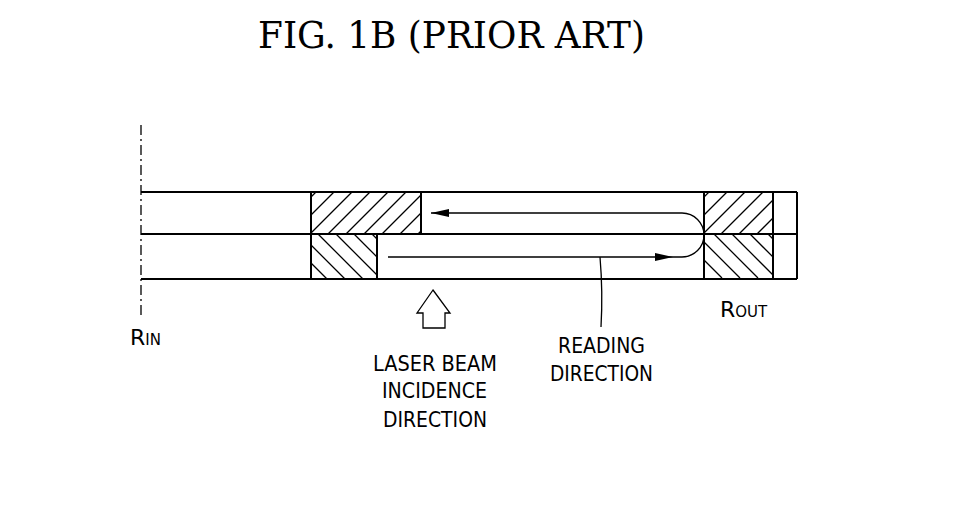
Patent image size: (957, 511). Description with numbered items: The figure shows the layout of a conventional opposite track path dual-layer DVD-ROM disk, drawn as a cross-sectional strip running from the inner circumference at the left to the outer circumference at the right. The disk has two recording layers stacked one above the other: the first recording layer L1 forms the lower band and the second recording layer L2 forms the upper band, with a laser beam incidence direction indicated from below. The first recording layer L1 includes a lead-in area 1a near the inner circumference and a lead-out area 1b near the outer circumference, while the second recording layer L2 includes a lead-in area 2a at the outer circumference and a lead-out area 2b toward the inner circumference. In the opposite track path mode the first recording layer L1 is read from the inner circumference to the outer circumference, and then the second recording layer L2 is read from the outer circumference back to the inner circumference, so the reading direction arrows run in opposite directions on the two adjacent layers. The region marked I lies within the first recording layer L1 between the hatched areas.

The lead-in area 1a is at (345, 280).
The lead-out area 1b is at (760, 258).
The lead-in area 2a is at (762, 213).
The lead-out area 2b is at (366, 191).
The first recording layer L1 is at (155, 261).
The second recording layer L2 is at (155, 216).
The information recording region I is at (516, 280).